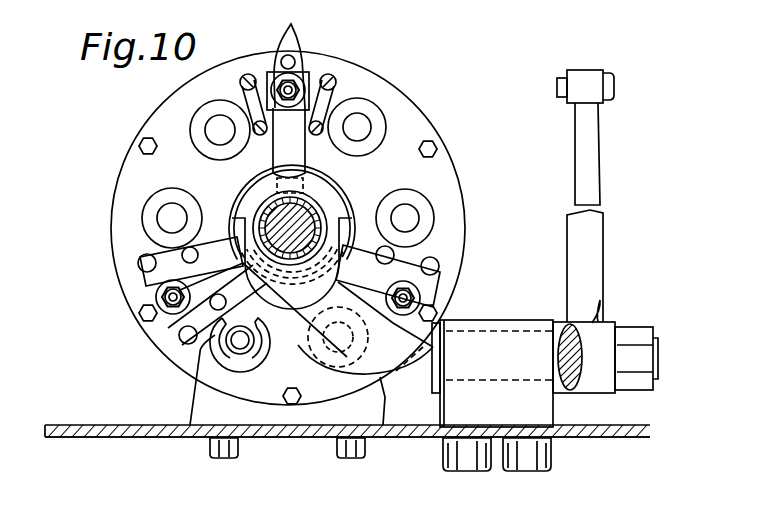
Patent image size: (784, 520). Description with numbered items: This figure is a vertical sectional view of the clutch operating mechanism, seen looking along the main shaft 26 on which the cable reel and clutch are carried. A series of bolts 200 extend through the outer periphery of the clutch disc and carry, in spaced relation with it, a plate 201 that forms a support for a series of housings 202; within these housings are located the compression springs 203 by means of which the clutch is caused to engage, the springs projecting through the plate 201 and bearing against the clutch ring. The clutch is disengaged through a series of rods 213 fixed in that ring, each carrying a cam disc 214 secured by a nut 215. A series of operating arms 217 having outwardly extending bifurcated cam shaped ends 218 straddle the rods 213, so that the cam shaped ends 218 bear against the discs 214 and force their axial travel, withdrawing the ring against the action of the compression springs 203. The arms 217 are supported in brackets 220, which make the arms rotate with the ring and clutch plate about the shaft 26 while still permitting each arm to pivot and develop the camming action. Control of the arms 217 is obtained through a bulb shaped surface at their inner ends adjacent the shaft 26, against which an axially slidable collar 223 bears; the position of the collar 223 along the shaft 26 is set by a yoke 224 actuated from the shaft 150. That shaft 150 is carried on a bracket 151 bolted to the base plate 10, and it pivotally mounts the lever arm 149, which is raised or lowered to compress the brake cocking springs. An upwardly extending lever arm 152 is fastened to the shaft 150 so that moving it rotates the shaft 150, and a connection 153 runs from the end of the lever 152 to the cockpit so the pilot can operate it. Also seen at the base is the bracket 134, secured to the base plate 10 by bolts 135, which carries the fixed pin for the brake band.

The base plate 10 is at (162, 440).
The main shaft 26 is at (304, 212).
The bracket 134 is at (271, 427).
The bolts 135 is at (226, 458).
The lever arm 149 is at (580, 387).
The shaft 150 is at (510, 330).
The bracket 151 is at (455, 406).
The upwardly extending lever arm 152 is at (590, 141).
The connection 153 is at (614, 85).
The bolts 200 is at (140, 146).
The plate 201 is at (124, 170).
The housings 202 is at (378, 120).
The compression springs 203 is at (240, 356).
The rods 213 is at (185, 286).
The cam discs 214 is at (168, 326).
The nuts 215 is at (172, 357).
The operating arms 217 is at (282, 155).
The bifurcated cam shaped ends 218 is at (289, 46).
The brackets 220 is at (190, 374).
The collar 223 is at (252, 202).
The yoke 224 is at (340, 197).